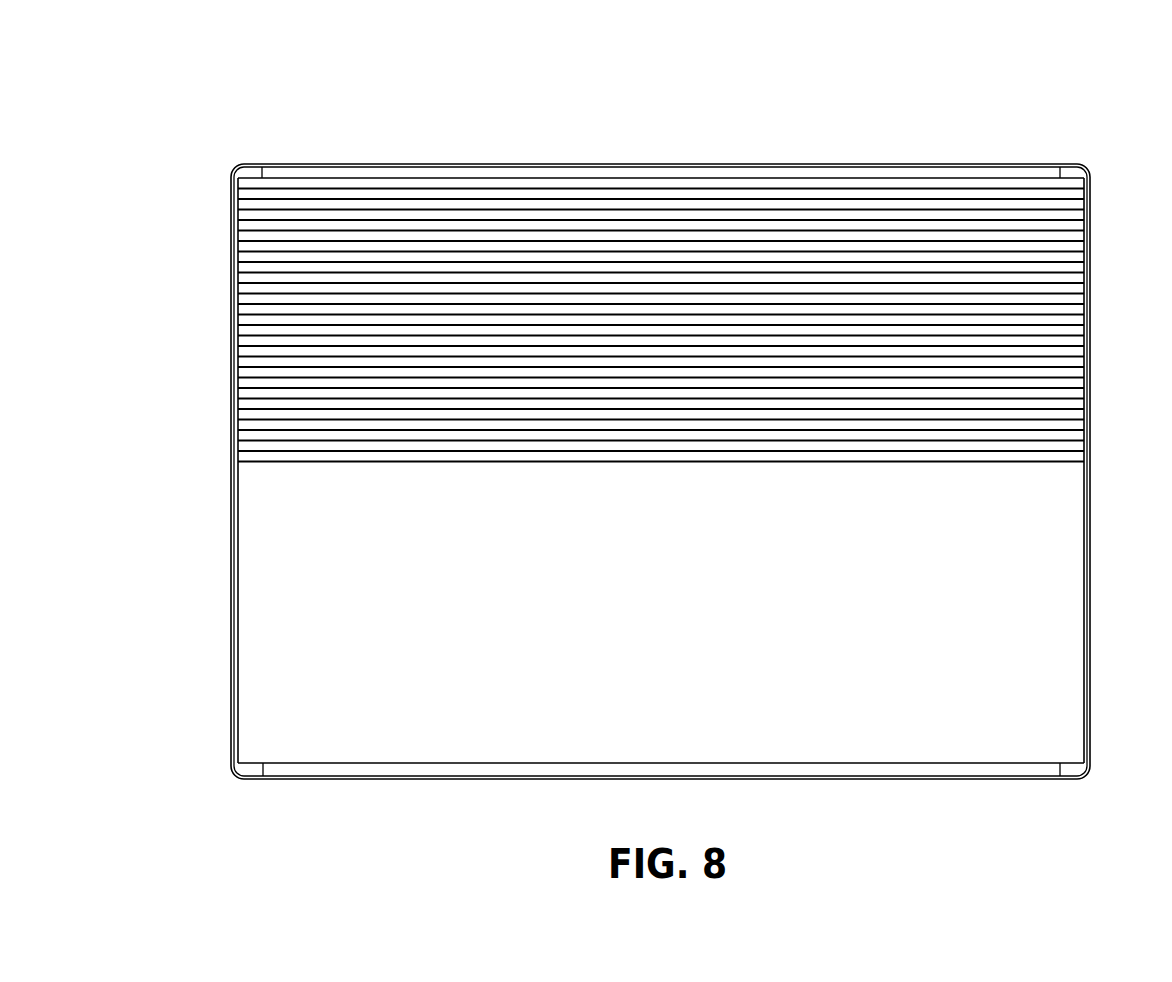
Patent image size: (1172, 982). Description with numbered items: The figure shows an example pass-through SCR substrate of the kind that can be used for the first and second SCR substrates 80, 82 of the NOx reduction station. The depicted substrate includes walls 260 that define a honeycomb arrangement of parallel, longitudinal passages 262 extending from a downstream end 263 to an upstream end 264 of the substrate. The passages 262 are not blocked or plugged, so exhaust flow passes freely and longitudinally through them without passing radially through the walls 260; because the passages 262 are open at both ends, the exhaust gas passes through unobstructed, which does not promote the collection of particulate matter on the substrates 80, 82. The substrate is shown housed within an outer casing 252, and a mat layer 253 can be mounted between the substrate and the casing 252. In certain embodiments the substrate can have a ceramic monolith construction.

The first SCR substrate 80 is at (927, 88).
The second SCR substrate 82 is at (660, 471).
The outer casing 252 is at (838, 164).
The mat layer 253 is at (423, 172).
The walls 260 is at (551, 198).
The passages 262 is at (508, 203).
The downstream end 263 is at (1090, 517).
The upstream end 264 is at (233, 563).